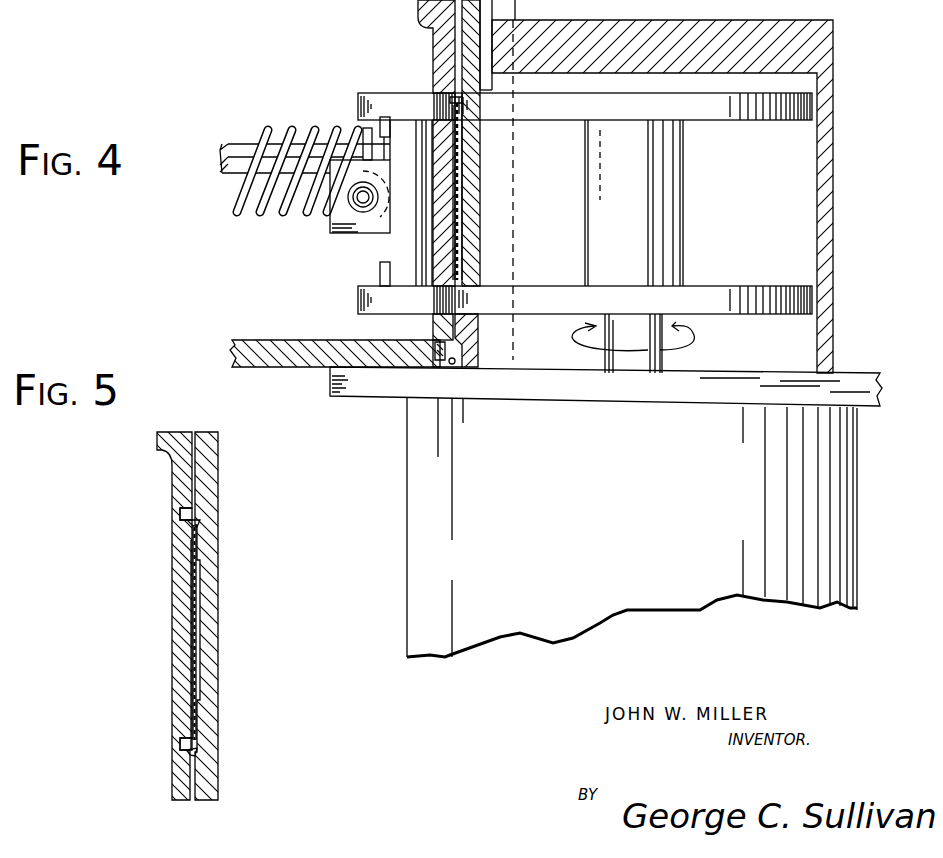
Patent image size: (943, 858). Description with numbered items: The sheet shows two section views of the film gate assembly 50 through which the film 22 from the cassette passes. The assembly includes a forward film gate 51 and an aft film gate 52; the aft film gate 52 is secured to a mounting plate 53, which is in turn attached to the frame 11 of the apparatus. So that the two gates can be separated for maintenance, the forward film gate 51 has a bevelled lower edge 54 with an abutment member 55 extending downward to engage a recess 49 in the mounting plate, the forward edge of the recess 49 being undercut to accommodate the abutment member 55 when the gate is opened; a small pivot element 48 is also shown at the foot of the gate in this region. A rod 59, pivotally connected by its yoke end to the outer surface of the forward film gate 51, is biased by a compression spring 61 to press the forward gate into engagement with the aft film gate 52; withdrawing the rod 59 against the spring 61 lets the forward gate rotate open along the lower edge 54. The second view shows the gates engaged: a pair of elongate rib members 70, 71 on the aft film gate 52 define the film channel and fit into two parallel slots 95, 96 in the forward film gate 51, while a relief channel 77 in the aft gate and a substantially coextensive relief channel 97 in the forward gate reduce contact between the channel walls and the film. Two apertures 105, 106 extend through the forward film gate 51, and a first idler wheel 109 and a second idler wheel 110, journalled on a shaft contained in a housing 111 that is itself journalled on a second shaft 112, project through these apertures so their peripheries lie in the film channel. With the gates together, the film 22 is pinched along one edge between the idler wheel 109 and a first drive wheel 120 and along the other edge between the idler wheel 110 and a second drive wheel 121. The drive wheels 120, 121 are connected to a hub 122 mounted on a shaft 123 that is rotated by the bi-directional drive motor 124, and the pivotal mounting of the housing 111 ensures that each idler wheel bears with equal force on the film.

In FIG. 4, the frame 11 is at (330, 392).
In FIG. 4, the film 22 is at (455, 212).
In FIG. 5, the film 22 is at (190, 650).
In FIG. 4, the pivot 48 is at (455, 365).
In FIG. 4, the recess 49 is at (457, 343).
In FIG. 4, the film gate assembly 50 is at (273, 266).
In FIG. 5, the forward film gate 51 is at (157, 445).
In FIG. 4, the aft film gate 52 is at (449, 143).
In FIG. 5, the aft film gate 52 is at (220, 495).
In FIG. 4, the mounting plate 53 is at (240, 340).
In FIG. 4, the bevelled lower edge 54 is at (435, 337).
In FIG. 4, the abutment member 55 is at (443, 362).
In FIG. 4, the rod 59 is at (229, 146).
In FIG. 4, the compression spring 61 is at (268, 128).
In FIG. 5, the rib member 70 is at (187, 522).
In FIG. 5, the rib member 71 is at (182, 742).
In FIG. 4, the relief channel 77 is at (462, 160).
In FIG. 5, the relief channel 77 is at (198, 580).
In FIG. 5, the slot 95 is at (185, 510).
In FIG. 5, the slot 96 is at (187, 752).
In FIG. 4, the relief channel 97 is at (452, 248).
In FIG. 5, the relief channel 97 is at (187, 598).
In FIG. 4, the aperture 105 is at (435, 84).
In FIG. 4, the aperture 106 is at (383, 268).
In FIG. 4, the first idler wheel 109 is at (358, 92).
In FIG. 4, the second idler wheel 110 is at (358, 294).
In FIG. 4, the housing 111 is at (387, 246).
In FIG. 4, the second shaft 112 is at (358, 208).
In FIG. 4, the first drive wheel 120 is at (795, 122).
In FIG. 4, the second drive wheel 121 is at (730, 290).
In FIG. 4, the hub 122 is at (681, 212).
In FIG. 4, the shaft 123 is at (662, 350).
In FIG. 4, the bi-directional drive motor 124 is at (407, 452).